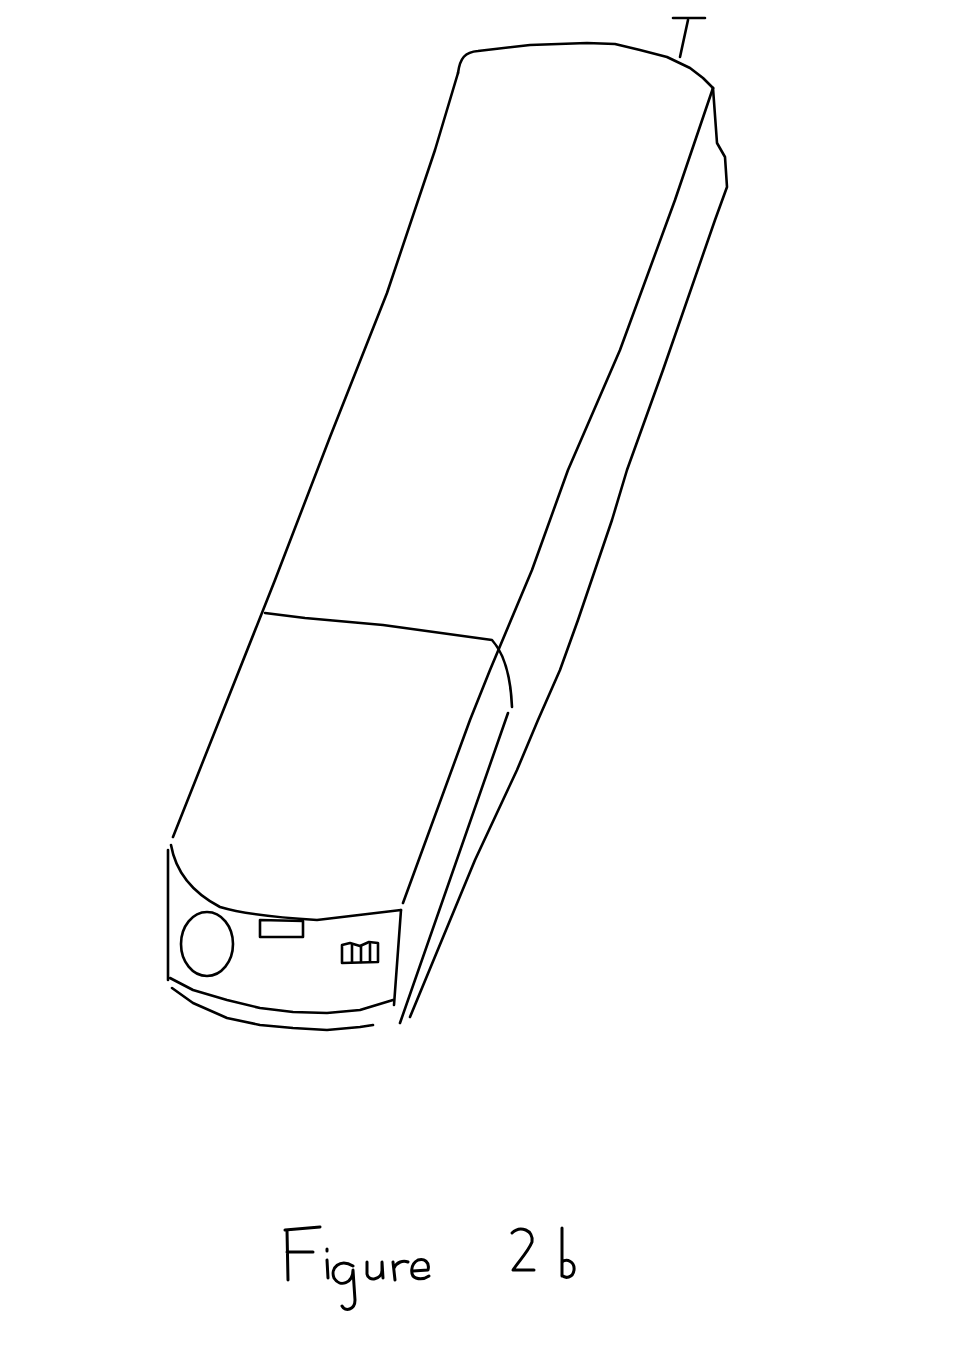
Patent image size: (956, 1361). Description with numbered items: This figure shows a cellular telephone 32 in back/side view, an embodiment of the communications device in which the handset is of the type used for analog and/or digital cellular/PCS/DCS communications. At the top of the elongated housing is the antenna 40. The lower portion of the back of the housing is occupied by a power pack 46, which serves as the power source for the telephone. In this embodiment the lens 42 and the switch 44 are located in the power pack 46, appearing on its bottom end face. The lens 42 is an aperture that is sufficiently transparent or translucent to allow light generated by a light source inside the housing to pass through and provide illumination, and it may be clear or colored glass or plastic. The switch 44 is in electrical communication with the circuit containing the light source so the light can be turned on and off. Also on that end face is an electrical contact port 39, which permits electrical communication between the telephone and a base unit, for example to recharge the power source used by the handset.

The cellular telephone 32 is at (663, 367).
The antenna 40 is at (697, 42).
The power pack 46 is at (420, 747).
The lens 42 is at (203, 948).
The electrical contact port 39 is at (278, 923).
The switch 44 is at (378, 953).